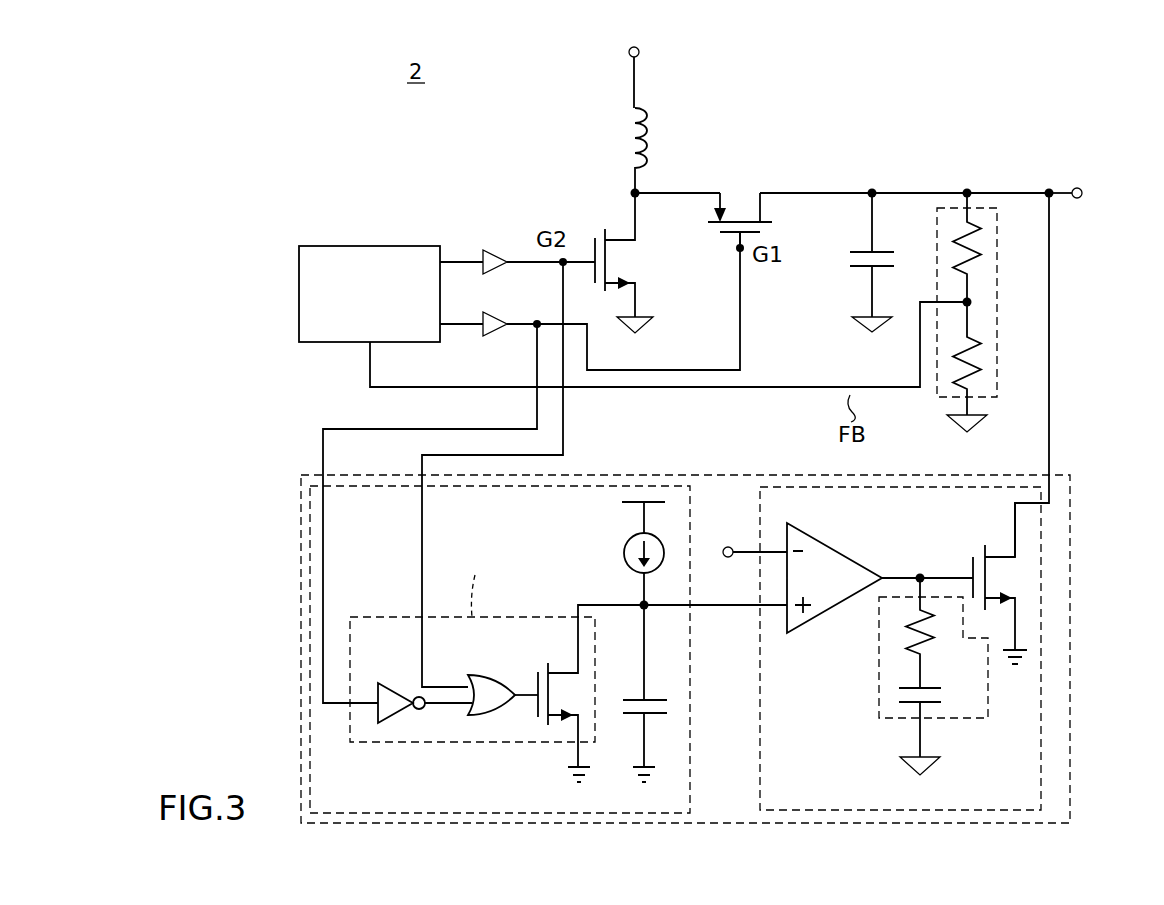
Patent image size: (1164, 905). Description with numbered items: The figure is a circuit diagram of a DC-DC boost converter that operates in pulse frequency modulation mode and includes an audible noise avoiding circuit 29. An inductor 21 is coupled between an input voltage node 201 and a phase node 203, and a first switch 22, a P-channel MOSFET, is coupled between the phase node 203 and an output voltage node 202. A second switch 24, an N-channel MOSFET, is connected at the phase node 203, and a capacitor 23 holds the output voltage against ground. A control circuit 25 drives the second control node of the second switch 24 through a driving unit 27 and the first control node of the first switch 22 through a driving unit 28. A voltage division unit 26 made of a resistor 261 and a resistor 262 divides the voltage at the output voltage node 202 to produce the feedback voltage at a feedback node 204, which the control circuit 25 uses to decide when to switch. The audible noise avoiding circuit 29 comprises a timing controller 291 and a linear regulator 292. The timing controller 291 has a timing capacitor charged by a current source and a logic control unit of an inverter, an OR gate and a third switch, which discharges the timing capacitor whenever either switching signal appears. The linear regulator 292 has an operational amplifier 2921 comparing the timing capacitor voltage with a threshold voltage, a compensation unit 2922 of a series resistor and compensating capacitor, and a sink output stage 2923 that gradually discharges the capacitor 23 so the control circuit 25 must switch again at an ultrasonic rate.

The input voltage node 201 is at (629, 54).
The output voltage node 202 is at (1074, 186).
The phase node 203 is at (631, 190).
The feedback node 204 is at (985, 300).
The inductor 21 is at (626, 138).
The first switch 22 is at (737, 198).
The capacitor 23 is at (842, 268).
The second switch 24 is at (628, 258).
The control circuit 25 is at (368, 245).
The voltage division unit 26 is at (947, 205).
The resistor 261 is at (985, 252).
The resistor 262 is at (985, 360).
The driving unit 27 is at (498, 250).
The driving unit 28 is at (497, 338).
The audible noise avoiding circuit 29 is at (763, 475).
The timing controller 291 is at (605, 485).
The linear regulator 292 is at (1041, 530).
The operational amplifier 2921 is at (835, 607).
The compensation unit 2922 is at (963, 722).
The sink output stage 2923 is at (997, 548).